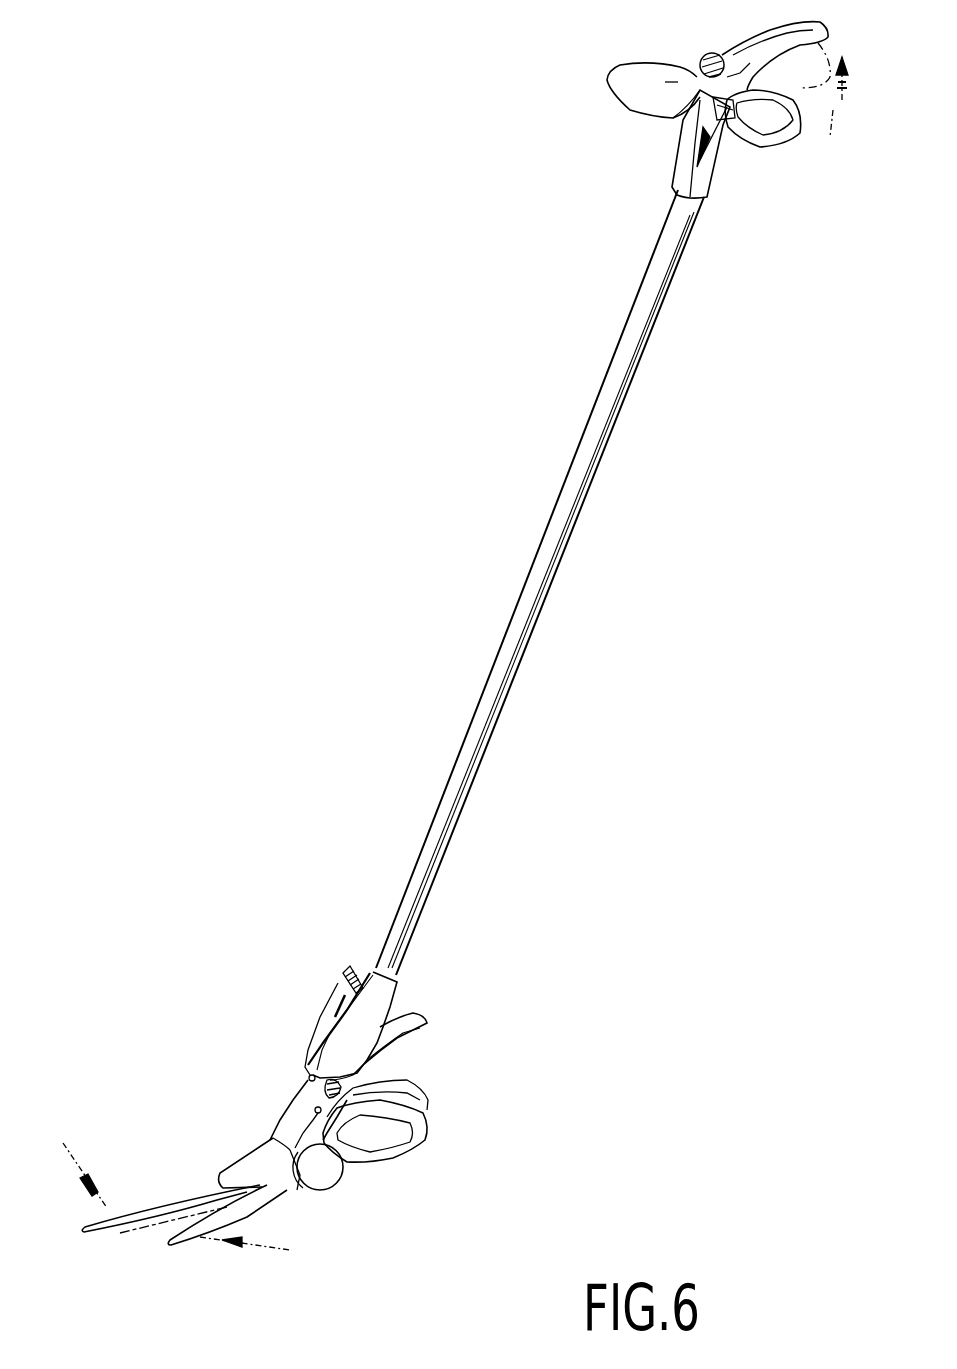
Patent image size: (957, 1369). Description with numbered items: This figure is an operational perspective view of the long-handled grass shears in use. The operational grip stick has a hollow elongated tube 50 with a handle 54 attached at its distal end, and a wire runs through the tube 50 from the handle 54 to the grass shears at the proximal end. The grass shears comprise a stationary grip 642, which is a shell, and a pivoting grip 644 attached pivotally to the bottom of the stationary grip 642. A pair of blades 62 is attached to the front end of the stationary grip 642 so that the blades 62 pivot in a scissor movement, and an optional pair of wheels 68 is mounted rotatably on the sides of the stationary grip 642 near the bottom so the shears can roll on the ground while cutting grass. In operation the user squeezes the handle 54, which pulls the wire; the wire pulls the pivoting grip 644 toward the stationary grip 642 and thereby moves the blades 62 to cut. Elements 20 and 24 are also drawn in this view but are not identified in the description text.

The cutting head assembly 20 is at (305, 1012).
The pivoting flap 24 is at (430, 1020).
The elongated tube 50 is at (562, 520).
The handle 54 is at (600, 138).
The pair of blades 62 is at (173, 1193).
The pair of wheels 68 is at (324, 1190).
The stationary grip 642 is at (377, 1063).
The pivoting grip 644 is at (407, 1147).